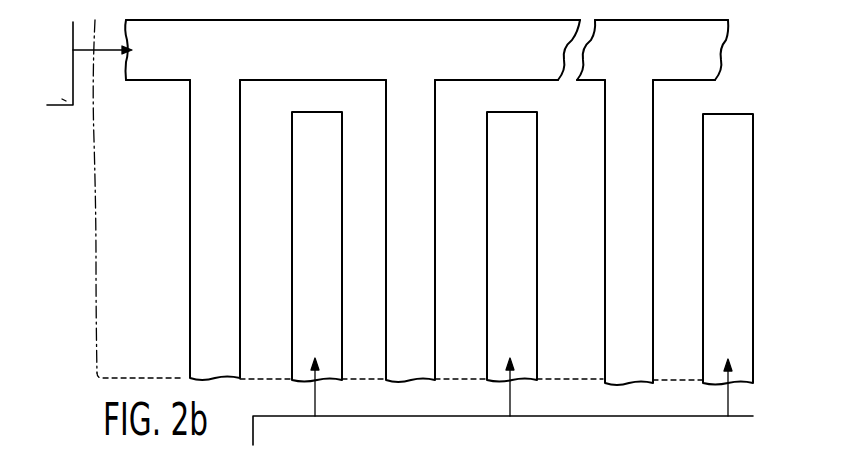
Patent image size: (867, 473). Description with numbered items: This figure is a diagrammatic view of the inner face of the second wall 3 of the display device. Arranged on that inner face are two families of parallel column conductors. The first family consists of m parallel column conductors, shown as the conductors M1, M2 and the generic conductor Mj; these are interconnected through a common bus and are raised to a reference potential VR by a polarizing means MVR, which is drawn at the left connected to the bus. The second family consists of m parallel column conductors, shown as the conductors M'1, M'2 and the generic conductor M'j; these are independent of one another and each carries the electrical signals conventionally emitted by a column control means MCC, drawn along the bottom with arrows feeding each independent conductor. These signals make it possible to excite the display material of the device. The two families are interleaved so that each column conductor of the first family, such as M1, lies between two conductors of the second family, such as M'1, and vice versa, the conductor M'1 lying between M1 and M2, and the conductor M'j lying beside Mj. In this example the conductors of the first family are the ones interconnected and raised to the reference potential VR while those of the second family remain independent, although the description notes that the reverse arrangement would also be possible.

The polarizing means MVR is at (64, 100).
The reference potential VR is at (113, 52).
The second wall 3 is at (124, 134).
The column conductor of the first family M1 is at (202, 170).
The column conductor of the second family M'1 is at (294, 247).
The column conductor of the first family M2 is at (398, 162).
The column conductor of the second family M'2 is at (488, 247).
The column conductor of the first family Mj is at (647, 133).
The column conductor of the second family M'j is at (729, 232).
The column control means MCC is at (503, 404).